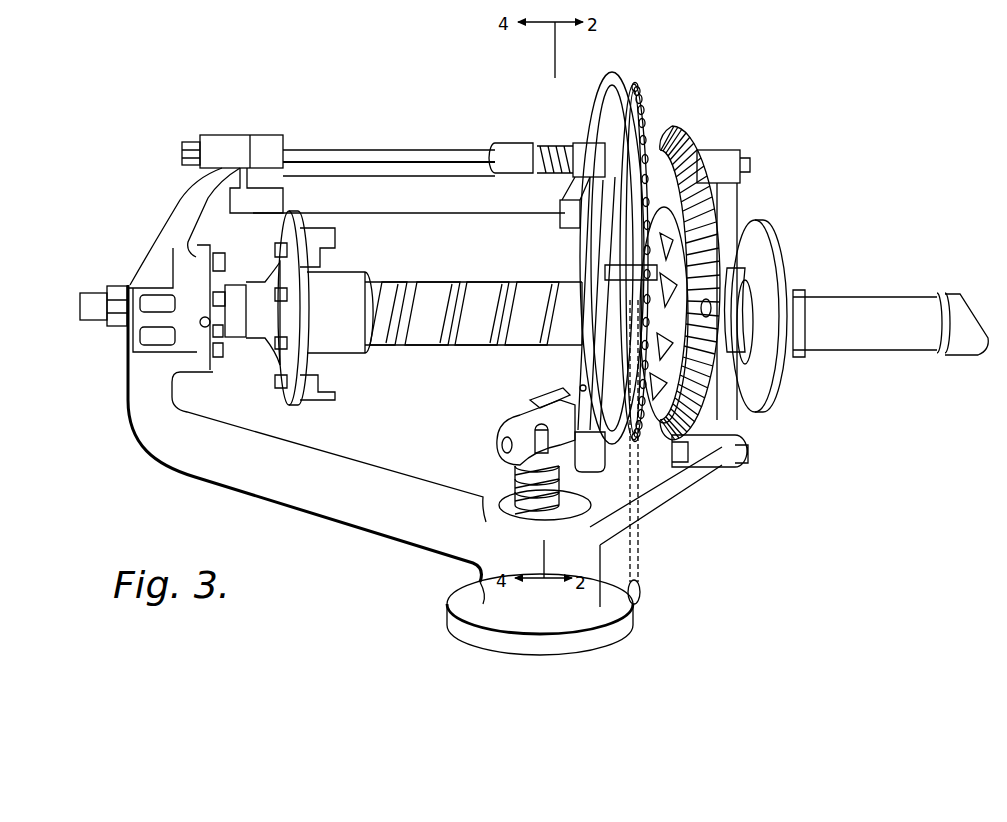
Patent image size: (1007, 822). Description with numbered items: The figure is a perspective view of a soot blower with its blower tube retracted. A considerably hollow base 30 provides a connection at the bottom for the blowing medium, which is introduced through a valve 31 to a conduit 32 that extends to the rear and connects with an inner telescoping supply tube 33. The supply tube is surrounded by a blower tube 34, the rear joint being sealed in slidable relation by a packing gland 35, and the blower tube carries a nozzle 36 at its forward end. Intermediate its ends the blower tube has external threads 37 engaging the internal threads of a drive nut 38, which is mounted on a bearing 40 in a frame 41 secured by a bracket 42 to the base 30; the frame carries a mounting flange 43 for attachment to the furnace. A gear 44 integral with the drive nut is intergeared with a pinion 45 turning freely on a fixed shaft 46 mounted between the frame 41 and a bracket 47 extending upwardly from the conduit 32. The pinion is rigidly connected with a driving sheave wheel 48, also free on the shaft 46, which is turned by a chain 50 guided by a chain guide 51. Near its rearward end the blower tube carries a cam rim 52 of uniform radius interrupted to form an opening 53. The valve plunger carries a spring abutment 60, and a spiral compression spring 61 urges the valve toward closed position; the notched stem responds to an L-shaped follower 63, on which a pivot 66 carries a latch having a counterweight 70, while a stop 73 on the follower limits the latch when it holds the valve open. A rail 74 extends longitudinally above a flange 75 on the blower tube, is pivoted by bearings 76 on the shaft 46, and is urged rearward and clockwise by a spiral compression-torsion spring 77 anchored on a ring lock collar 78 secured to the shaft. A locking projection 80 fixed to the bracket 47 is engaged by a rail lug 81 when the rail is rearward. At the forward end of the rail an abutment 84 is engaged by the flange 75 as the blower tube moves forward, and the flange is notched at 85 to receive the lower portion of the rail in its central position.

The hollow base 30 is at (630, 616).
The valve 31 is at (530, 537).
The conduit 32 is at (337, 458).
The inner telescoping supply tube 33 is at (235, 327).
The blower tube 34 is at (468, 337).
The packing gland 35 is at (273, 282).
The nozzle 36 is at (957, 297).
The external threads 37 is at (502, 290).
The drive nut 38 is at (670, 327).
The bearing 40 is at (712, 268).
The frame 41 is at (730, 432).
The bracket 42 is at (652, 494).
The mounting flange 43 is at (780, 244).
The gear 44 is at (700, 306).
The pinion 45 is at (683, 130).
The fixed shaft 46 is at (434, 152).
The bracket 47 is at (192, 208).
The driving sheave wheel 48 is at (640, 84).
The chain 50 is at (637, 127).
The chain guide 51 is at (605, 270).
The cam rim 52 is at (333, 234).
The opening 53 is at (317, 293).
The spring abutment 60 is at (520, 483).
The spiral compression spring 61 is at (560, 500).
The follower 63 is at (536, 432).
The pivot 66 is at (582, 383).
The counterweight 70 is at (590, 463).
The stop 73 is at (537, 393).
The rail 74 is at (435, 207).
The flange 75 is at (294, 214).
The bearings 76 is at (262, 146).
The spiral compression-torsion spring 77 is at (552, 146).
The ring lock collar 78 is at (582, 143).
The locking projection 80 is at (230, 208).
The rail lug 81 is at (248, 190).
The abutment 84 is at (560, 216).
The notch 85 is at (291, 212).